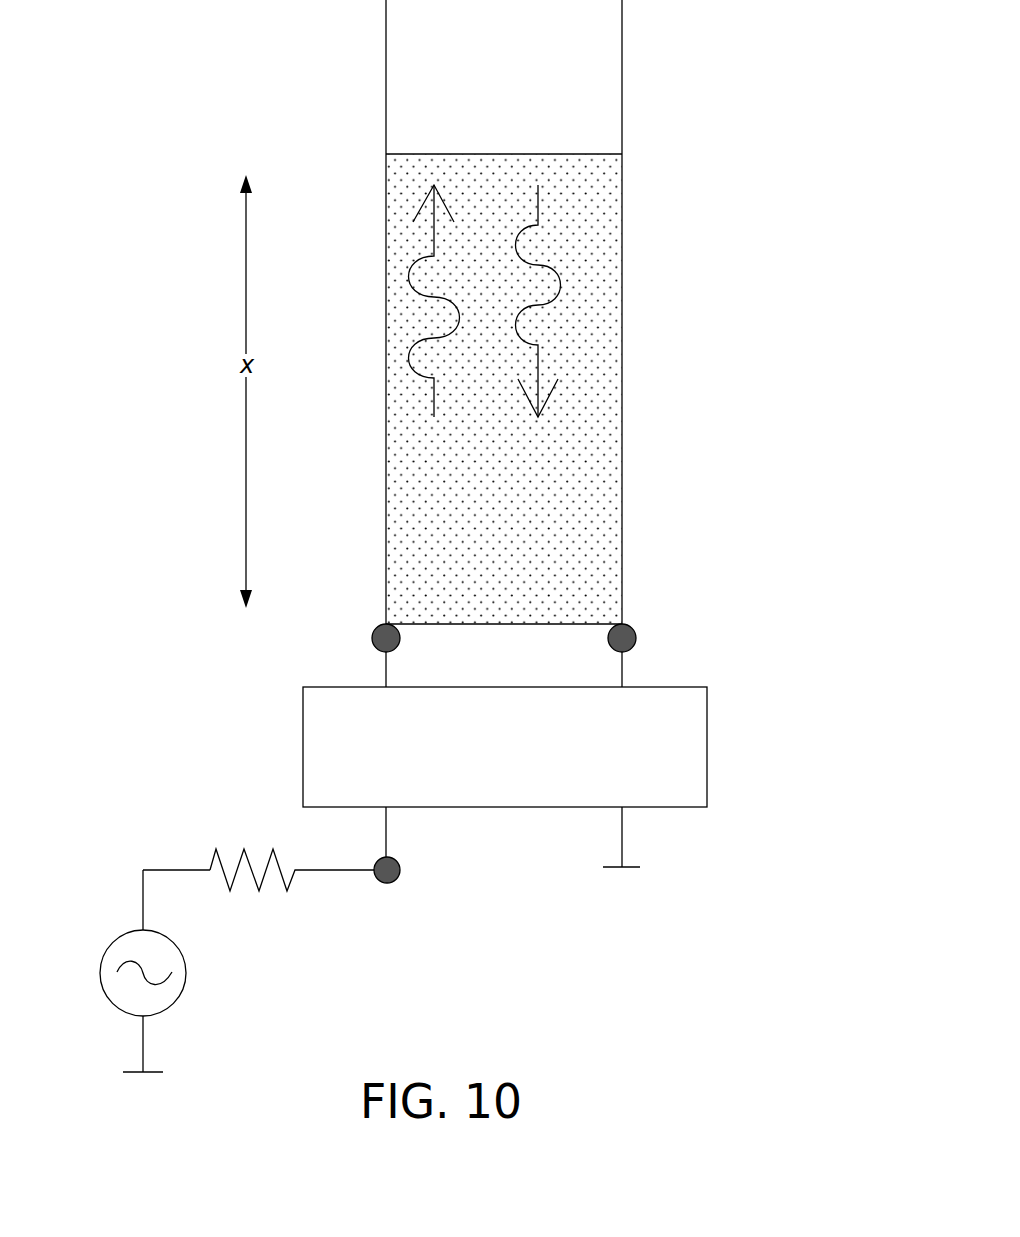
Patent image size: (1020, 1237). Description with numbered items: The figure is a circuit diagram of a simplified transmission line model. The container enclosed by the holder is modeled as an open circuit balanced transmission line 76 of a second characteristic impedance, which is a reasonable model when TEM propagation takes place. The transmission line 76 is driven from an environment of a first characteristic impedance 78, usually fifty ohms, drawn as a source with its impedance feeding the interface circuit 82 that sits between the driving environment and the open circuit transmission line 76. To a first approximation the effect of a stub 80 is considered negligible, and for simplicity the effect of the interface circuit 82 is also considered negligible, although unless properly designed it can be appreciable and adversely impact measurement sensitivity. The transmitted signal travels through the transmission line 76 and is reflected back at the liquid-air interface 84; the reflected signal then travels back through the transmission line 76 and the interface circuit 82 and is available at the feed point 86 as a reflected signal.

The transmission line 76 is at (625, 545).
The environment with characteristic impedance Zo1 78 is at (133, 888).
The stub 80 is at (473, 153).
The interface circuit 82 is at (707, 750).
The liquid-air interface 84 is at (570, 153).
The feed point 86 is at (397, 884).